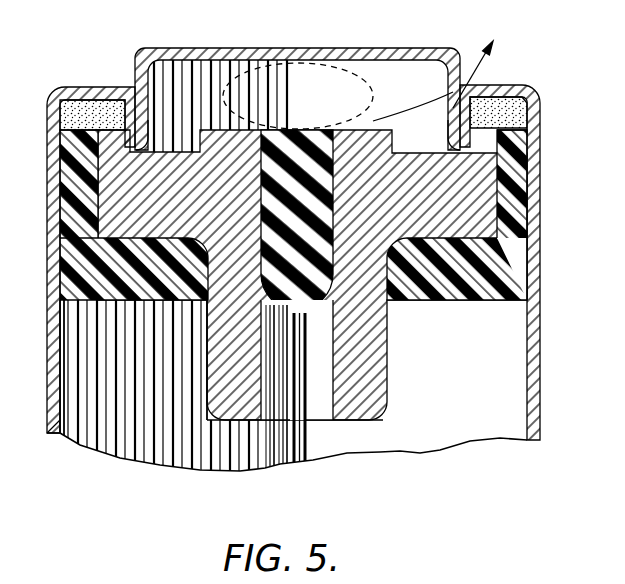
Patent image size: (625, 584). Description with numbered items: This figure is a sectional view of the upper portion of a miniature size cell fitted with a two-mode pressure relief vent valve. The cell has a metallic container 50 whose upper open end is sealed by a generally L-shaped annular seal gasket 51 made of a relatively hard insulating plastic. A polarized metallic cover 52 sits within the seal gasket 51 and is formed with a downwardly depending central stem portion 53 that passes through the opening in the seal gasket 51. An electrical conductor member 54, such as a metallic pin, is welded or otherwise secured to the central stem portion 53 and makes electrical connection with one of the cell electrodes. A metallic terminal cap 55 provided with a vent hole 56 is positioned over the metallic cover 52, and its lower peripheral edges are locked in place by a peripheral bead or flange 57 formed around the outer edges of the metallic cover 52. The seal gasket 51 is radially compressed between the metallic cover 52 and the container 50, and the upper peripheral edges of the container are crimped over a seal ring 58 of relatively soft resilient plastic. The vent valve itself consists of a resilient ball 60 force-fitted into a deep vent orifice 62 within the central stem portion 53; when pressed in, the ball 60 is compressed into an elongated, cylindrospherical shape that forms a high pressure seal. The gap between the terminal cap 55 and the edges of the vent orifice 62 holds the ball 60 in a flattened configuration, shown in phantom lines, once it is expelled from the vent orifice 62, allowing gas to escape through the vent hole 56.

The metallic container 50 is at (531, 247).
The L-shaped annular seal gasket 51 is at (522, 280).
The polarized metallic cover 52 is at (525, 188).
The central stem portion 53 is at (379, 352).
The electrical conductor member 54 is at (304, 440).
The metallic terminal cap 55 is at (384, 52).
The vent hole 56 is at (453, 90).
The peripheral bead or flange 57 is at (520, 137).
The seal ring 58 is at (520, 101).
The resilient ball 60 is at (290, 140).
The vent orifice 62 is at (318, 383).